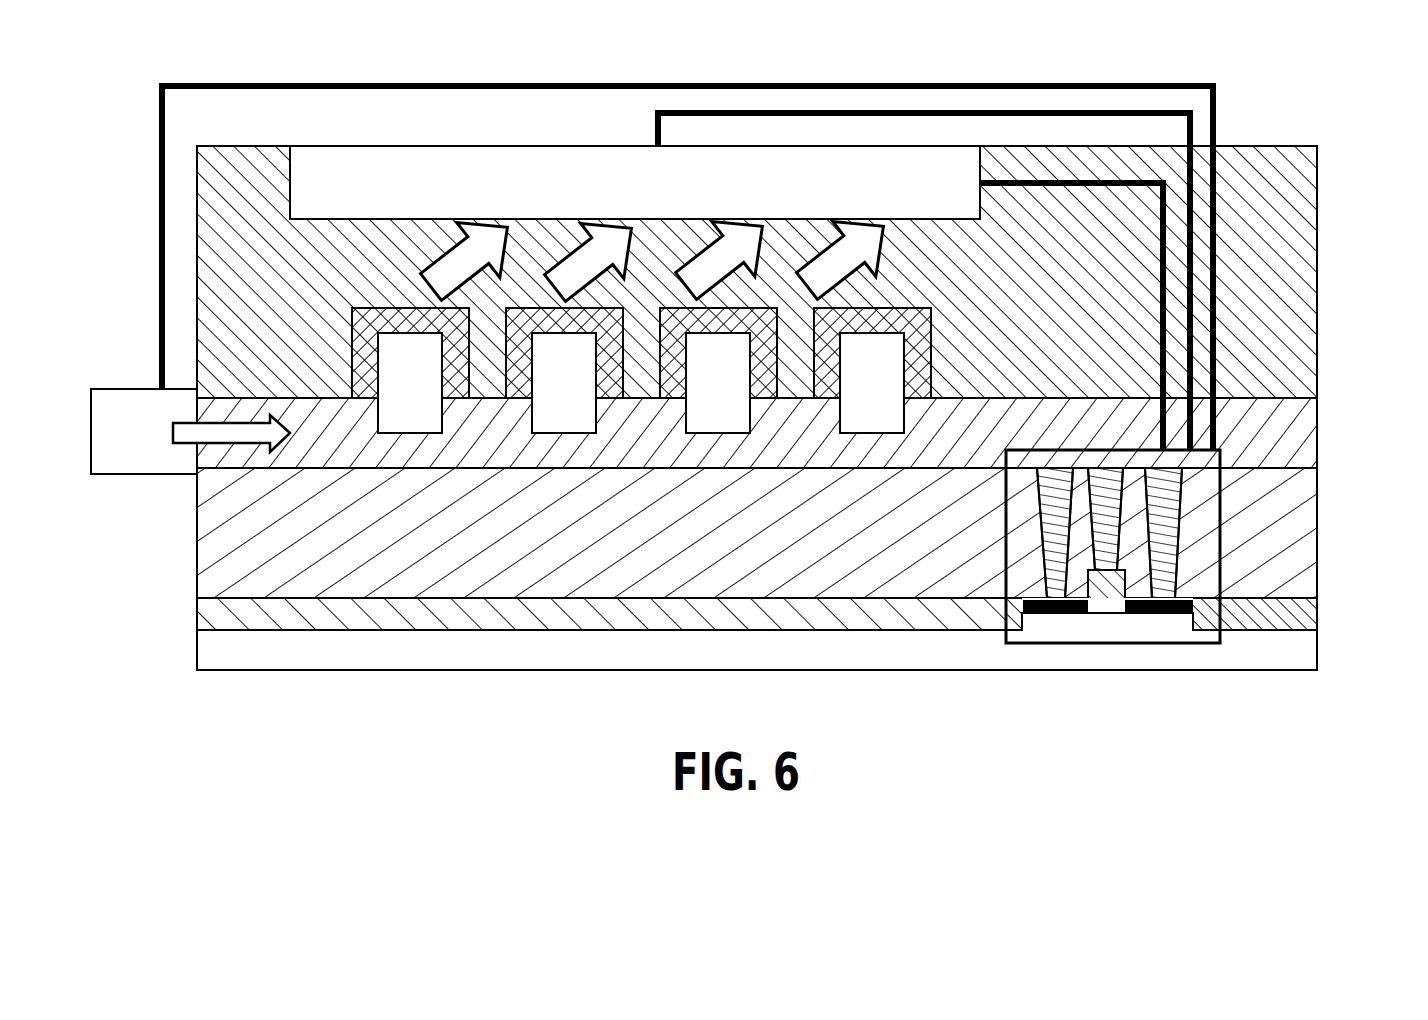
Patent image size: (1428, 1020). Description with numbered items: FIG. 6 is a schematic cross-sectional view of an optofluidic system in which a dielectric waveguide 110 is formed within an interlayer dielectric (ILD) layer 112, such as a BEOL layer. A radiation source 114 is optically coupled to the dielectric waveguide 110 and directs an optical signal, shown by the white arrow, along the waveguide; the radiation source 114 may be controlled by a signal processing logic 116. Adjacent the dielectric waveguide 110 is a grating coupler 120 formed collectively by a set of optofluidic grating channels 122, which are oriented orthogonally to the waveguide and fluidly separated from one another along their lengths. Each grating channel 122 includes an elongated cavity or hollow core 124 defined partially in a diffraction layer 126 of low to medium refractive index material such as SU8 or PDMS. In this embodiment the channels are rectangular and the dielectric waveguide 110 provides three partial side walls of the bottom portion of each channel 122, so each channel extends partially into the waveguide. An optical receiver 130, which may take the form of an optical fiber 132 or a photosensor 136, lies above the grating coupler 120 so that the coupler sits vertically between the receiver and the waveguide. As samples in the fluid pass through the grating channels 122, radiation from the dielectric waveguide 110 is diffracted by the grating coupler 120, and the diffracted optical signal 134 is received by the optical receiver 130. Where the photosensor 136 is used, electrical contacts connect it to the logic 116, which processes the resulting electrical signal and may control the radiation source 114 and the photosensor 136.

The dielectric waveguide 110 is at (243, 410).
The interlayer dielectric (ILD) layer 112 is at (1287, 372).
The radiation source 114 is at (143, 462).
The signal processing logic 116 is at (1222, 532).
The grating coupler 120 is at (938, 312).
The optofluidic grating channel 122 is at (419, 430).
The hollow core 124 is at (393, 415).
The diffraction layer 126 is at (388, 306).
The optical receiver 130 is at (635, 182).
The optical fiber 132 is at (635, 182).
The diffracted optical signal 134 is at (600, 257).
The photosensor 136 is at (320, 194).